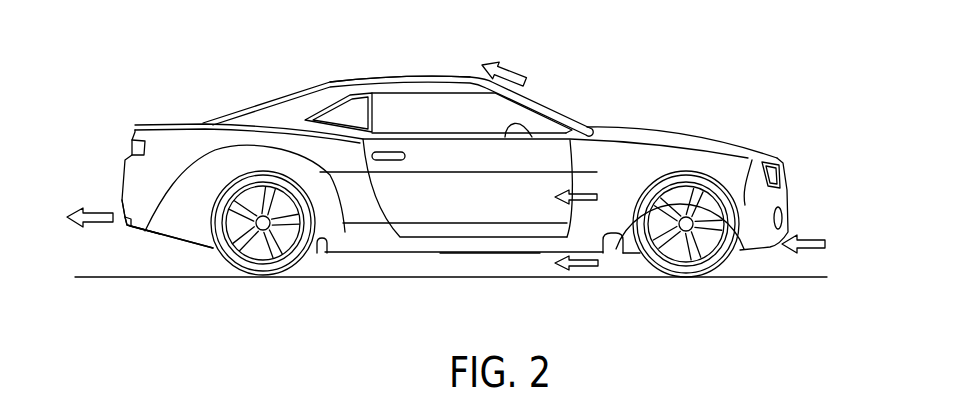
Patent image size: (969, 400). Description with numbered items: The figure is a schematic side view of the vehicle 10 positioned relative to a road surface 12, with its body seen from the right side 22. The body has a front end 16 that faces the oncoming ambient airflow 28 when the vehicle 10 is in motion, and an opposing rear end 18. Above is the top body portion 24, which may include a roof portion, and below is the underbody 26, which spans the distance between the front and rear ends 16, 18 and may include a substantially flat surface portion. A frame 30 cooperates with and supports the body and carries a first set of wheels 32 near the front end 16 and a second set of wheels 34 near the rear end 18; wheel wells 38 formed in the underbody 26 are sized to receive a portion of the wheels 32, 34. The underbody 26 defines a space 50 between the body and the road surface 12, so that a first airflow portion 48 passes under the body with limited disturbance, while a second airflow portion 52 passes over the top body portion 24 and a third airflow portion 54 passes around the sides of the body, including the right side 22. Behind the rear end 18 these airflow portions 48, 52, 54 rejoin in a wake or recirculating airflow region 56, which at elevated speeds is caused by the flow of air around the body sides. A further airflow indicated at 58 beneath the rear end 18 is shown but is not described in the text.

The vehicle 10 is at (567, 102).
The road surface 12 is at (738, 278).
The front end 16 is at (792, 197).
The rear end 18 is at (122, 200).
The right side 22 is at (412, 192).
The top body portion 24 is at (390, 78).
The underbody 26 is at (372, 259).
The oncoming ambient airflow 28 is at (822, 238).
The frame 30 is at (632, 253).
The first set of wheels 32 is at (722, 197).
The second set of wheels 34 is at (223, 200).
The wheel wells 38 is at (330, 253).
The first airflow portion 48 is at (577, 270).
The space 50 is at (490, 260).
The second airflow portion 52 is at (503, 65).
The third airflow portion 54 is at (593, 190).
The recirculating airflow region 56 is at (92, 225).
The airflow under rear end 58 is at (140, 247).